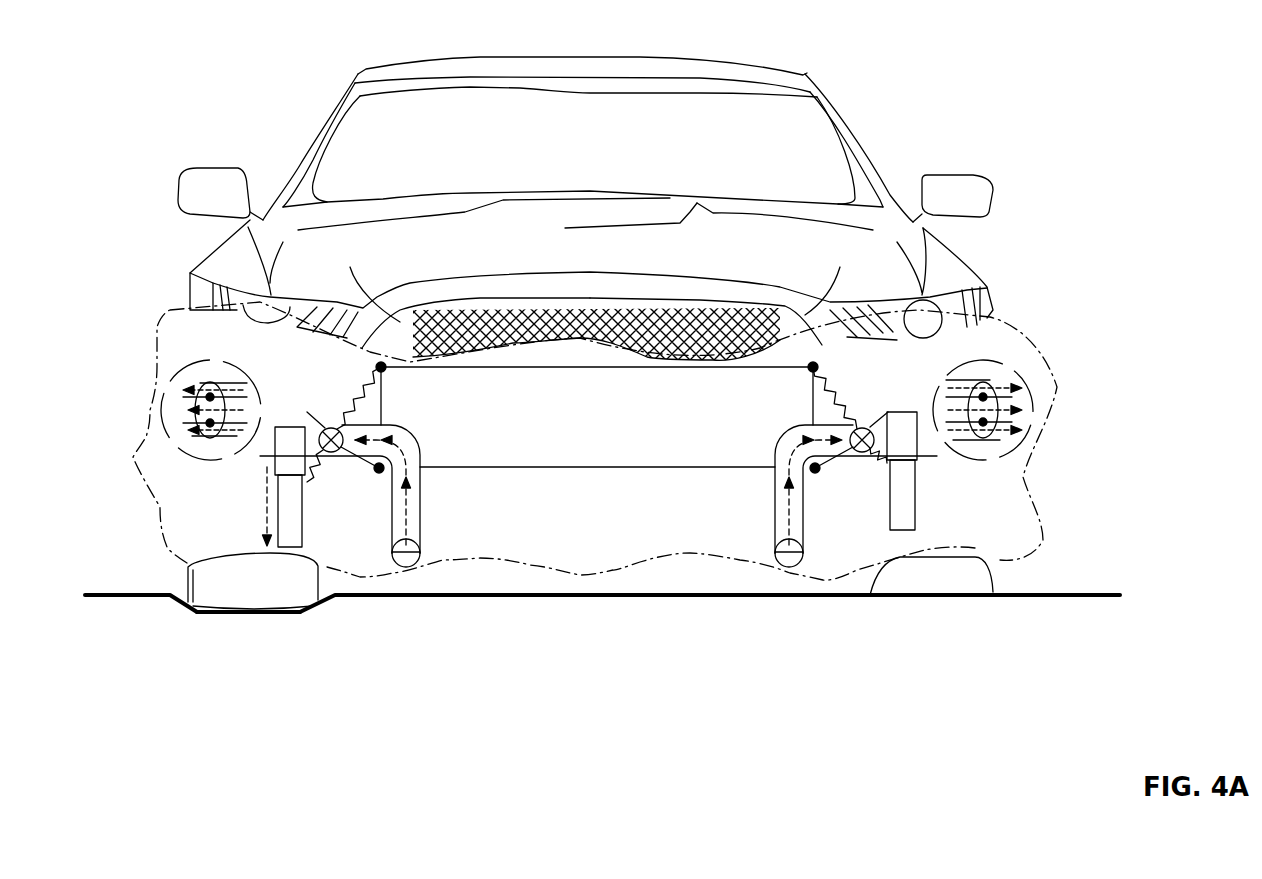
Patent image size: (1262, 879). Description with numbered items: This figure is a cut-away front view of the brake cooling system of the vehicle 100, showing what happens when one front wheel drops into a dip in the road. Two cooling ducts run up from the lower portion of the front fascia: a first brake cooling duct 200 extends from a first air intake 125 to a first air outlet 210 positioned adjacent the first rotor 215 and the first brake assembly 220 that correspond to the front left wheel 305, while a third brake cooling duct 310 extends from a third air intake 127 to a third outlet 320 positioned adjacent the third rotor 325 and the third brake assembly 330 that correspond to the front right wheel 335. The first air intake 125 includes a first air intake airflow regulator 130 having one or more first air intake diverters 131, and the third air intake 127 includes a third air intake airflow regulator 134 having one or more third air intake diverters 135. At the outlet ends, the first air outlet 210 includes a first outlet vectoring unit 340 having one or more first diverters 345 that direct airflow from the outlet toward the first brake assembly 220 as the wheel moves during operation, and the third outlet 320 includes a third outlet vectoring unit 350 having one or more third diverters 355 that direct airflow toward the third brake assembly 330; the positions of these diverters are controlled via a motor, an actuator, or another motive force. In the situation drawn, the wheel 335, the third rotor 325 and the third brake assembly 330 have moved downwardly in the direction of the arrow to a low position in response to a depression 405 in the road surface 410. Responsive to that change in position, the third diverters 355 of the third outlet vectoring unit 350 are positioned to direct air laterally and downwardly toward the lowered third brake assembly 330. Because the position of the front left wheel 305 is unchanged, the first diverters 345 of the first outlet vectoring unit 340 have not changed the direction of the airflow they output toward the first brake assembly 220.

The vehicle 100 is at (950, 104).
The first brake cooling duct 200 is at (774, 493).
The third brake cooling duct 310 is at (422, 494).
The first air intake 125 is at (783, 538).
The third air intake 127 is at (412, 538).
The first air intake airflow regulator 130 is at (770, 567).
The third air intake airflow regulator 134 is at (426, 568).
The first air intake diverter 131 is at (802, 540).
The third air intake diverter 135 is at (395, 540).
The first air outlet 210 is at (862, 427).
The first rotor 215 is at (918, 505).
The first brake assembly 220 is at (903, 410).
The third outlet 320 is at (212, 382).
The third rotor 325 is at (275, 525).
The third brake assembly 330 is at (303, 426).
The front right wheel 335 is at (184, 584).
The first outlet vectoring unit 340 is at (1015, 465).
The first diverter 345 is at (1022, 416).
The third outlet vectoring unit 350 is at (177, 462).
The third diverter 355 is at (183, 405).
The front left wheel 305 is at (1013, 563).
The depression 405 is at (255, 628).
The road surface 410 is at (578, 611).